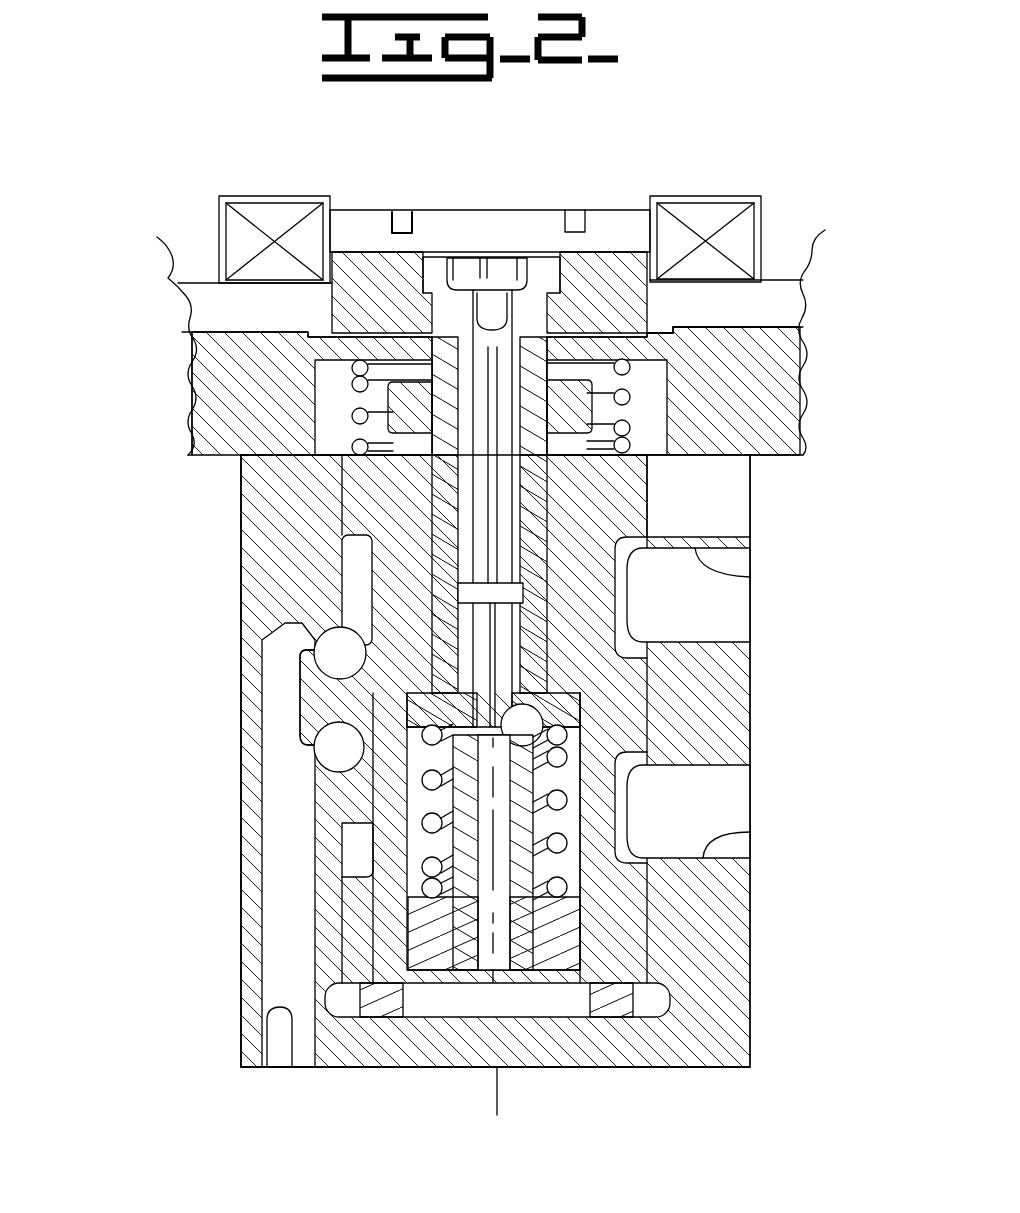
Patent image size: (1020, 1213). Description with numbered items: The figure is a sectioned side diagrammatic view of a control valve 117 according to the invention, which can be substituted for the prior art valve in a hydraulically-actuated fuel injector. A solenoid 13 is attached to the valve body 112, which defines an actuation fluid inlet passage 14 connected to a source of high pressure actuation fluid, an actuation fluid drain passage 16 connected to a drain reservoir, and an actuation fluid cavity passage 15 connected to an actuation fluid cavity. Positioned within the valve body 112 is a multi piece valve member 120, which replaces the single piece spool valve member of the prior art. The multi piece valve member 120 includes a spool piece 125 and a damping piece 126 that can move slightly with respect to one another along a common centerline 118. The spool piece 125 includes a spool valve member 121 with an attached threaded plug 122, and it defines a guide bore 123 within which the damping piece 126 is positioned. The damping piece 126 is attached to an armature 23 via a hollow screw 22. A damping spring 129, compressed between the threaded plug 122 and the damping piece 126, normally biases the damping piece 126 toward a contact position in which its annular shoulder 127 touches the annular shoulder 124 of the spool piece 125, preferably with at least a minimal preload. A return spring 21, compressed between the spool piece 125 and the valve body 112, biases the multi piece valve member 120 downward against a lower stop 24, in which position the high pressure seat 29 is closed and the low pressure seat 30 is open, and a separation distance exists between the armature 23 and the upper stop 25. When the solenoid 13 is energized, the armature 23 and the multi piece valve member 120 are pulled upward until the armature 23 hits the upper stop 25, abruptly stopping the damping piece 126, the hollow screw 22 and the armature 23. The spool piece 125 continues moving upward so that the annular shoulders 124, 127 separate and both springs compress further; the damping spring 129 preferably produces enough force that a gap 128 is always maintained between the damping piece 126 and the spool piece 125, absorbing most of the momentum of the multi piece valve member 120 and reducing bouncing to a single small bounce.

The solenoid 13 is at (753, 194).
The actuation fluid inlet passage 14 is at (750, 834).
The actuation fluid cavity passage 15 is at (290, 1068).
The actuation fluid drain passage 16 is at (750, 577).
The return spring 21 is at (352, 412).
The hollow screw 22 is at (492, 257).
The armature 23 is at (612, 222).
The lower stop 24 is at (617, 983).
The upper stop 25 is at (402, 243).
The high pressure seat 29 is at (320, 773).
The low pressure seat 30 is at (330, 648).
The valve body 112 is at (750, 892).
The control valve 117 is at (213, 737).
The common centerline 118 is at (497, 1087).
The multi piece valve member 120 is at (624, 798).
The spool valve member 121 is at (360, 823).
The threaded plug 122 is at (450, 1068).
The guide bore 123 is at (443, 548).
The annular shoulder 124 is at (592, 735).
The spool piece 125 is at (342, 713).
The damping piece 126 is at (433, 603).
The annular shoulder 127 is at (430, 693).
The gap 128 is at (525, 706).
The damping spring 129 is at (565, 783).